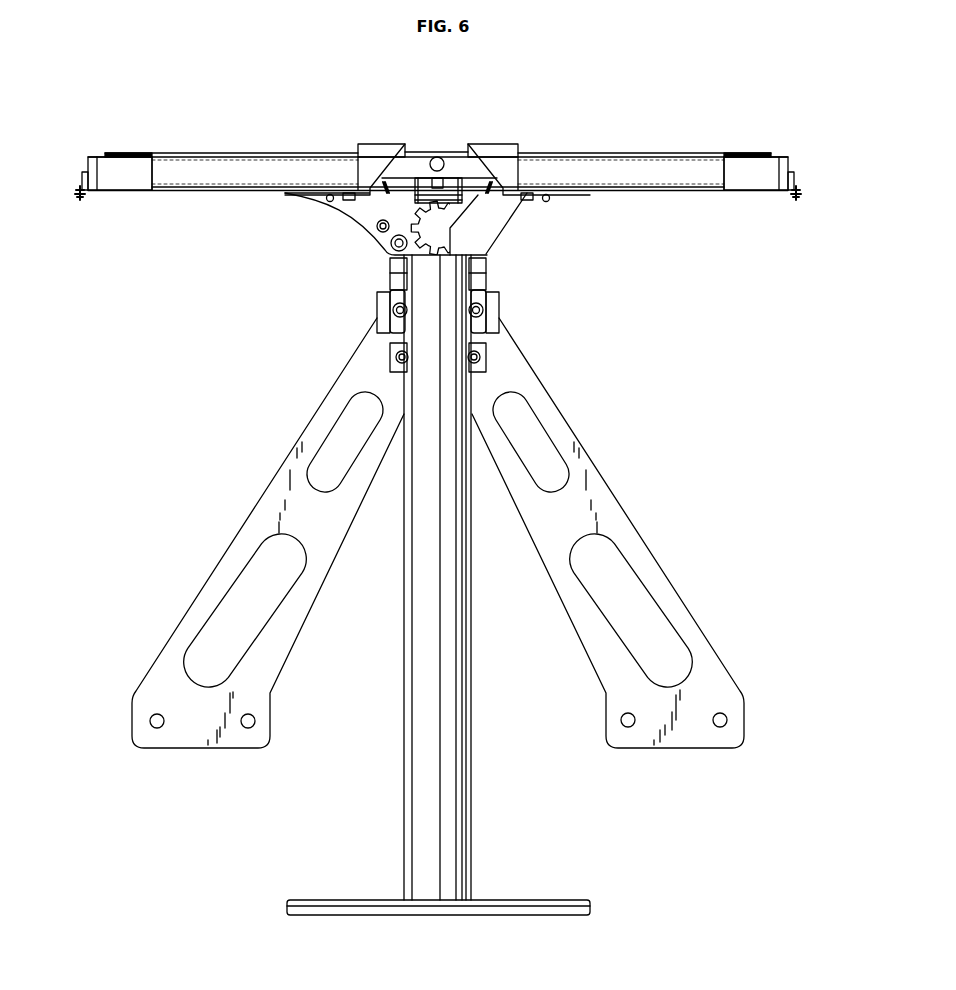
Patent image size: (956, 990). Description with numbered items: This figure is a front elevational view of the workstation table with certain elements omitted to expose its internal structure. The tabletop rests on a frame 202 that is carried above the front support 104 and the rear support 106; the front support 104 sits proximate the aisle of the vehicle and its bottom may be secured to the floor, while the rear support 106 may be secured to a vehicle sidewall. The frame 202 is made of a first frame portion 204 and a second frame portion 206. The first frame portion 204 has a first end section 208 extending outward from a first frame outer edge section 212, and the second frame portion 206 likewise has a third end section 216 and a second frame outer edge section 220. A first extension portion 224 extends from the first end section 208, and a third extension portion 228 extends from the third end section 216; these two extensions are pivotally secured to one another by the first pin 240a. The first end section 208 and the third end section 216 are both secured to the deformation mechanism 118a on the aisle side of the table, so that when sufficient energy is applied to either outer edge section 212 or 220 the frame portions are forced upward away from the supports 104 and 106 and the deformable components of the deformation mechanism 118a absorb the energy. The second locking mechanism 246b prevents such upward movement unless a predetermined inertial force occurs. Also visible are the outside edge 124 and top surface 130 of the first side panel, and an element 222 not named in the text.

The front support 104 is at (414, 814).
The rear support 106 is at (606, 672).
The deformation mechanism 118a is at (362, 224).
The outside edge 124 is at (88, 168).
The top surface 130 is at (797, 173).
The frame 202 is at (185, 185).
The first frame portion 204 is at (88, 164).
The second frame portion 206 is at (775, 162).
The first end section 208 is at (215, 178).
The first frame outer edge section 212 is at (86, 178).
The third end section 216 is at (617, 183).
The second frame outer edge section 220 is at (792, 164).
The hub plate 222 is at (405, 144).
The first extension portion 224 is at (415, 158).
The third extension portion 228 is at (460, 168).
The first pin 240a is at (436, 157).
The second locking mechanism 246b is at (473, 190).